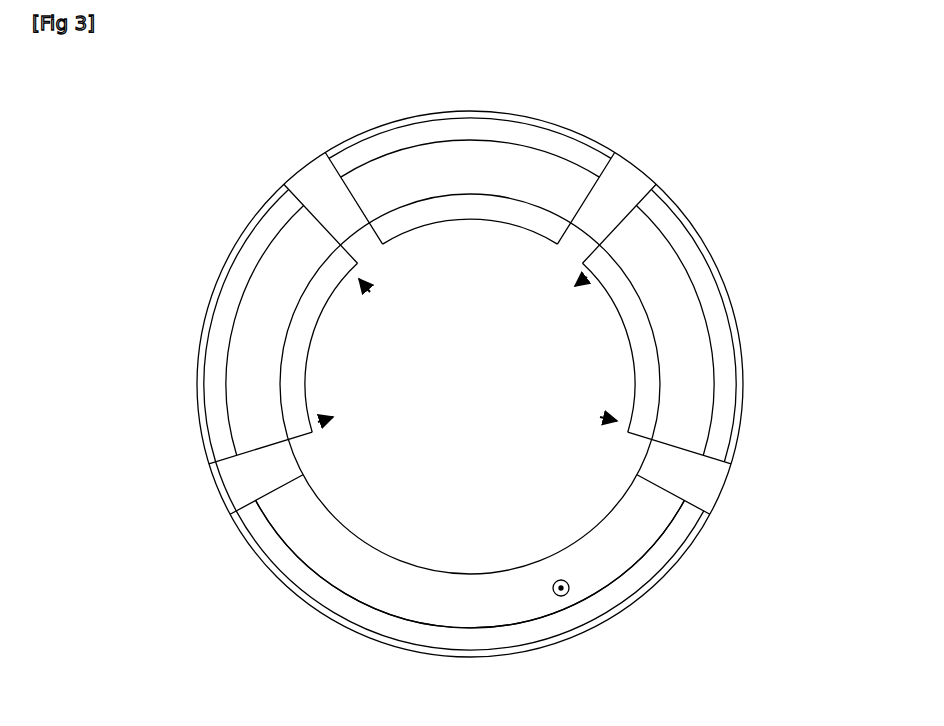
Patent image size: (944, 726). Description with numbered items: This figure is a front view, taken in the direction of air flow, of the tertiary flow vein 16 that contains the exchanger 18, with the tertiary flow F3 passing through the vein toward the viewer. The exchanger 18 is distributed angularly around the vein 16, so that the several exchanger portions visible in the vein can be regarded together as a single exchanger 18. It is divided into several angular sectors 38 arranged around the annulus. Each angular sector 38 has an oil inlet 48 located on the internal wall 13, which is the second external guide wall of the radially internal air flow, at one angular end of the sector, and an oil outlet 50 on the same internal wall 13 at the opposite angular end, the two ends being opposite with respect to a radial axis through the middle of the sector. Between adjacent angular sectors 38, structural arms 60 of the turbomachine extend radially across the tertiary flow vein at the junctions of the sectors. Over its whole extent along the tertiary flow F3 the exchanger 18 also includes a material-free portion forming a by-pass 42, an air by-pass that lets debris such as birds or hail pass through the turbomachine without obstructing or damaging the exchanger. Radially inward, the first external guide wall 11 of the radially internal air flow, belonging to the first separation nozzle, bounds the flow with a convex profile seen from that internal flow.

The first external guide wall 11 is at (335, 625).
The internal wall 13 is at (478, 576).
The tertiary flow vein 16 is at (470, 633).
The exchanger 18 is at (557, 114).
The angular sector 38 is at (475, 282).
The by-pass 42 is at (403, 137).
The oil inlet 48 is at (538, 257).
The oil outlet 50 is at (404, 258).
The structural arm 60 is at (352, 220).
The tertiary flow F3 is at (569, 590).